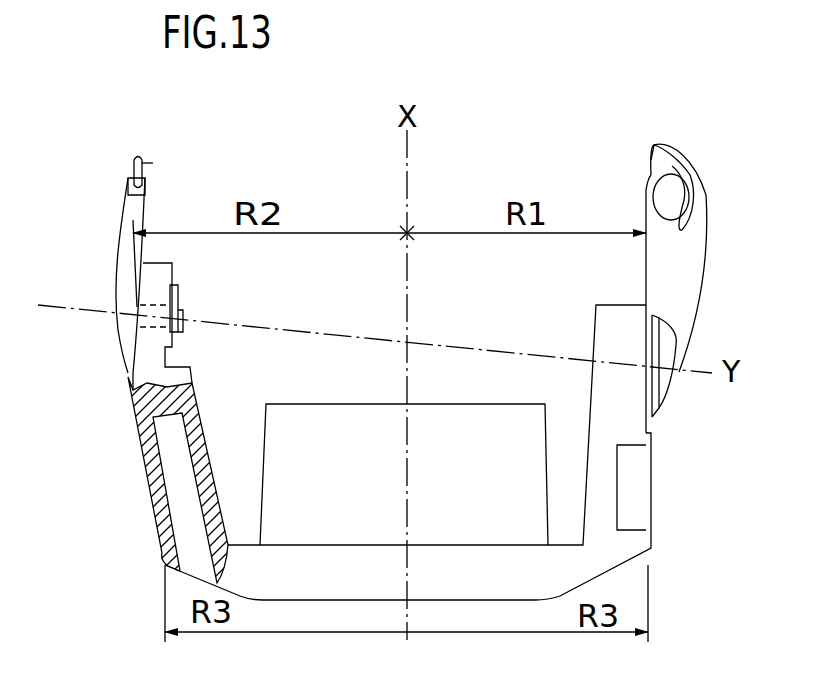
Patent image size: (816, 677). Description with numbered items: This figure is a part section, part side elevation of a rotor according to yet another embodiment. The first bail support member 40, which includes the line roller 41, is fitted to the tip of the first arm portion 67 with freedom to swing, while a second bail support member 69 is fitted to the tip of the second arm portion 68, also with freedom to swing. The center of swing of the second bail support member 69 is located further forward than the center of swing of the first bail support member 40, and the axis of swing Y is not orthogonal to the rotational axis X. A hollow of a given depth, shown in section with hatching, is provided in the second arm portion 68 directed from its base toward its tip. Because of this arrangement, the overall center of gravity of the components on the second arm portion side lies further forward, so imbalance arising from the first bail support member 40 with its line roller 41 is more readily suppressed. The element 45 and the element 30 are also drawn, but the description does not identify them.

The pin 45 is at (130, 163).
The second bail support member 69 is at (122, 287).
The second arm portion 68 is at (142, 419).
The cassette / component block 30 is at (302, 402).
The first bail support member 40 is at (692, 265).
The line roller 41 is at (708, 190).
The first arm portion 67 is at (640, 465).